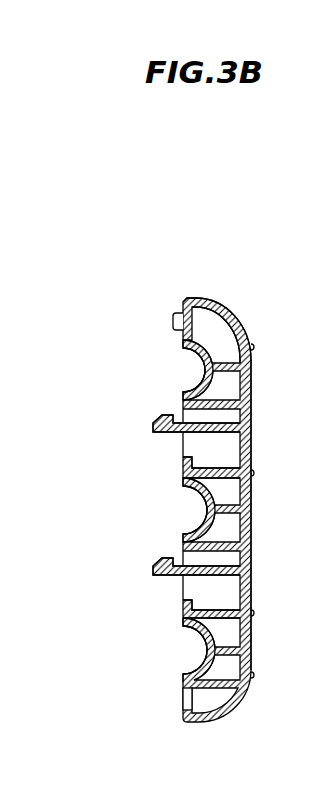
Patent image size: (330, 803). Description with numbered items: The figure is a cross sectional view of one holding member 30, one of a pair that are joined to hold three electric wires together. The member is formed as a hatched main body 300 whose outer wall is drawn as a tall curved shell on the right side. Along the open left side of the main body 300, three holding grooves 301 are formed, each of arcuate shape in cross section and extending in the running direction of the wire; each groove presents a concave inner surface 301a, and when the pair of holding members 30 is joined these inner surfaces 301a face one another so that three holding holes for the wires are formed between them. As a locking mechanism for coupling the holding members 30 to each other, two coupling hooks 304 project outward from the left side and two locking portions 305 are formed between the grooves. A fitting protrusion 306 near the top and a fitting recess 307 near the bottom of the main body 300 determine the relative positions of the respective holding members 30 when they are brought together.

The holding member 30 is at (160, 236).
The main body 300 is at (231, 314).
The holding groove 301 is at (204, 361).
The inner surface of holding groove 301a is at (185, 369).
The coupling hook 304 is at (157, 421).
The locking portion 305 is at (183, 464).
The fitting protrusion 306 is at (172, 319).
The fitting recess 307 is at (186, 701).